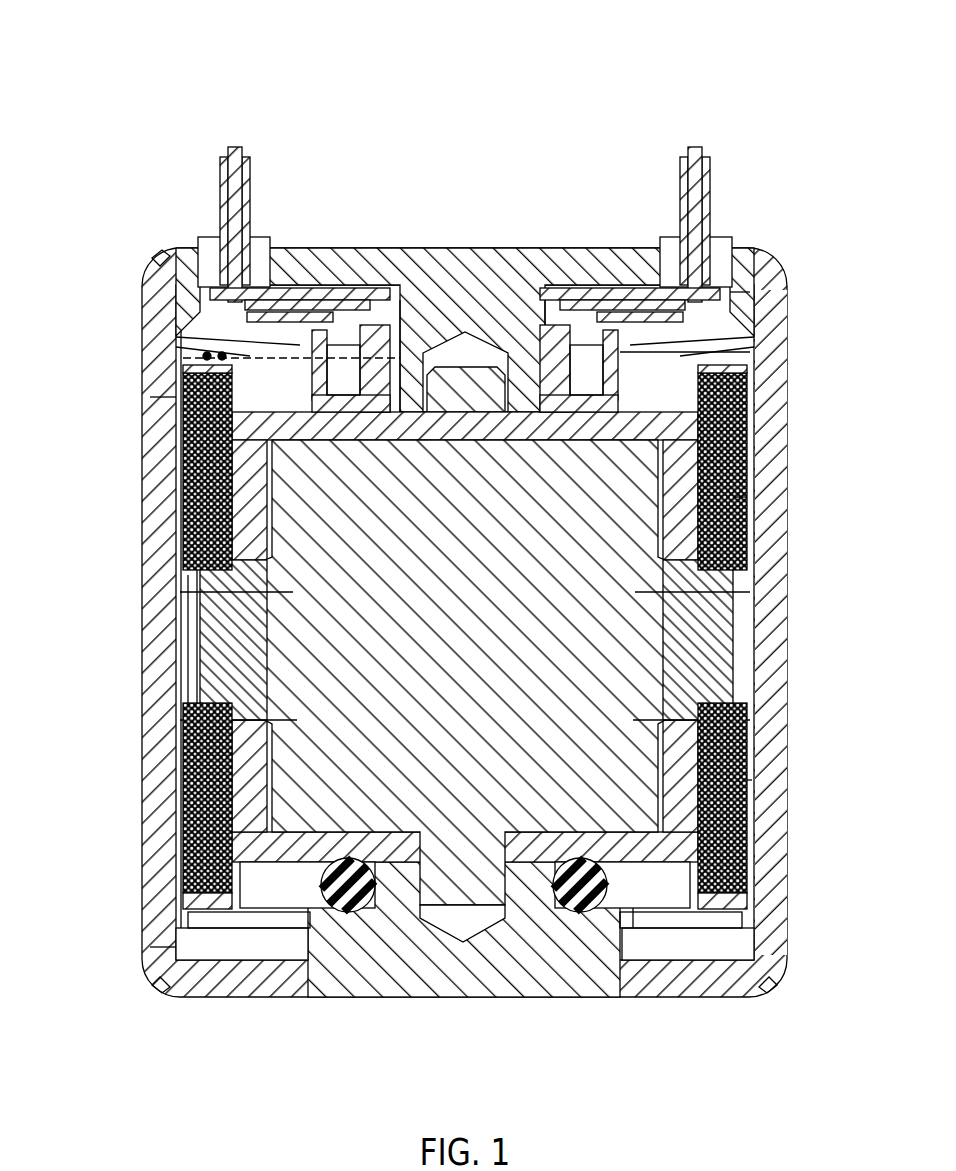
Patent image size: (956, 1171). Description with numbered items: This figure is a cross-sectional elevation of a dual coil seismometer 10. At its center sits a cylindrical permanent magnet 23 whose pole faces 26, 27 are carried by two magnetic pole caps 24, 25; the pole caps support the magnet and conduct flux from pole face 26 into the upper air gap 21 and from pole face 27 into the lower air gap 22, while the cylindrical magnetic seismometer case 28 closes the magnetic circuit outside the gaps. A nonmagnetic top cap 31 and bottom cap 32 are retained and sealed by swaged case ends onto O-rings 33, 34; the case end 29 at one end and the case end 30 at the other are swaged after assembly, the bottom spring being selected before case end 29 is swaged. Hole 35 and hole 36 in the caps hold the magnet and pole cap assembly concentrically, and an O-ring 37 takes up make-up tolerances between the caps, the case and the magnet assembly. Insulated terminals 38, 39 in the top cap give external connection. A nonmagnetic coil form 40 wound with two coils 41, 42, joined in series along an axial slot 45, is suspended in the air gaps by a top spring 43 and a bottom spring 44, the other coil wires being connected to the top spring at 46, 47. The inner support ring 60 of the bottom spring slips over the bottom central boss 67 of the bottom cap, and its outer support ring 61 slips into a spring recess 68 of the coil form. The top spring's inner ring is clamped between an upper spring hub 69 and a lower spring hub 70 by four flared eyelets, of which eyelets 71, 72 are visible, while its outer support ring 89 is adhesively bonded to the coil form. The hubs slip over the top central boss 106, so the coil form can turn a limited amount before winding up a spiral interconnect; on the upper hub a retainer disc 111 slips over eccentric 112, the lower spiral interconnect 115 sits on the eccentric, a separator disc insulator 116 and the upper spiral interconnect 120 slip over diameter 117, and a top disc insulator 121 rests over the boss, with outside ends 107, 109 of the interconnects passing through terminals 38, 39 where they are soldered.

The dual coil seismometer 10 is at (620, 240).
The air gap 21 is at (180, 468).
The air gap 22 is at (170, 783).
The permanent magnet 23 is at (590, 630).
The magnetic pole cap 24 is at (560, 432).
The magnetic pole cap 25 is at (575, 832).
The magnet pole face 26 is at (270, 442).
The magnet pole face 27 is at (358, 832).
The seismometer case 28 is at (155, 625).
The case end 29 is at (150, 397).
The housing bottom wall 30 is at (150, 947).
The top cap 31 is at (313, 248).
The bottom cap 32 is at (290, 997).
The O-ring 33 is at (160, 258).
The O-ring 34 is at (160, 985).
The hole 35 is at (487, 352).
The hole 36 is at (458, 938).
The O-ring 37 is at (575, 912).
The insulated terminal 38 is at (262, 237).
The insulated terminal 39 is at (668, 237).
The coil form 40 is at (715, 662).
The coil 41 is at (735, 497).
The coil 42 is at (752, 780).
The top spring 43 is at (213, 355).
The bottom spring 44 is at (633, 928).
The axial slot 45 is at (185, 655).
The connection point 46 is at (203, 352).
The connection point 47 is at (212, 320).
The inner support ring 60 is at (348, 912).
The outer support ring 61 is at (205, 928).
The bottom central boss 67 is at (398, 900).
The spring recess 68 is at (185, 915).
The upper spring hub 69 is at (408, 300).
The lower spring hub 70 is at (450, 336).
The eyelet 71 is at (305, 378).
The eyelet 72 is at (720, 390).
The outer support ring 89 is at (735, 372).
The top central boss 106 is at (522, 385).
The outside end 107 is at (233, 147).
The outside end 109 is at (696, 147).
The retainer disc 111 is at (215, 294).
The eccentric 112 is at (358, 300).
The lower spiral interconnect 115 is at (178, 296).
The separator disc insulator 116 is at (720, 322).
The diameter 117 is at (565, 300).
The upper spiral interconnect 120 is at (722, 305).
The top disc insulator 121 is at (735, 292).